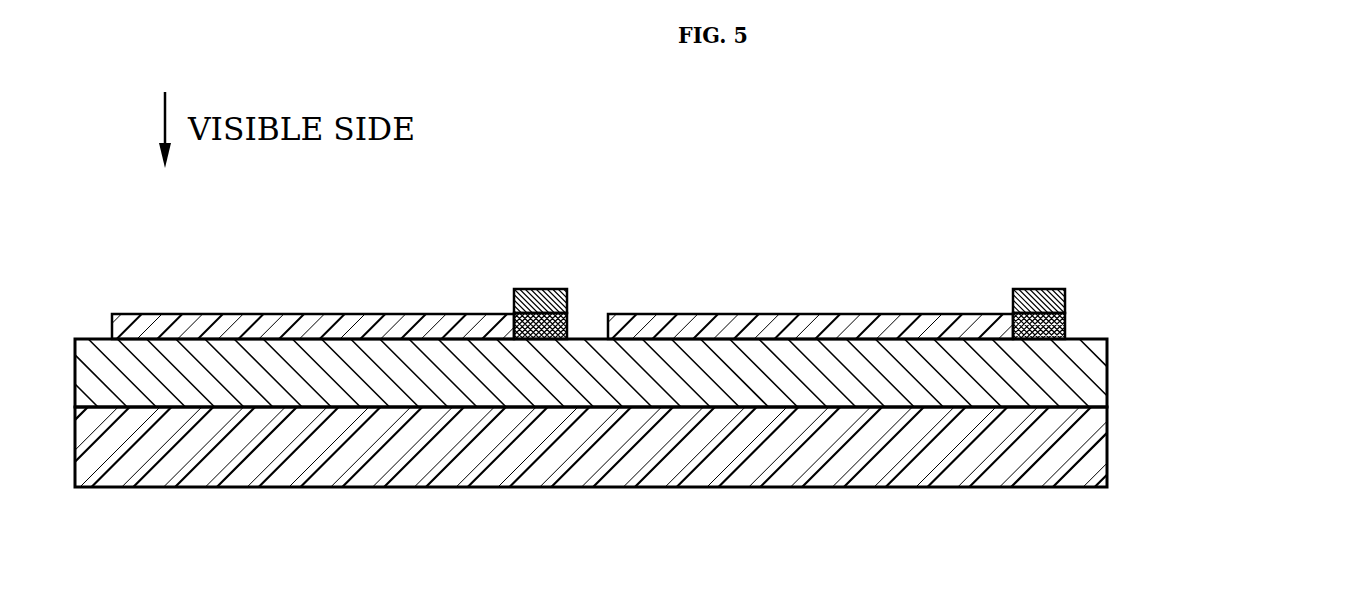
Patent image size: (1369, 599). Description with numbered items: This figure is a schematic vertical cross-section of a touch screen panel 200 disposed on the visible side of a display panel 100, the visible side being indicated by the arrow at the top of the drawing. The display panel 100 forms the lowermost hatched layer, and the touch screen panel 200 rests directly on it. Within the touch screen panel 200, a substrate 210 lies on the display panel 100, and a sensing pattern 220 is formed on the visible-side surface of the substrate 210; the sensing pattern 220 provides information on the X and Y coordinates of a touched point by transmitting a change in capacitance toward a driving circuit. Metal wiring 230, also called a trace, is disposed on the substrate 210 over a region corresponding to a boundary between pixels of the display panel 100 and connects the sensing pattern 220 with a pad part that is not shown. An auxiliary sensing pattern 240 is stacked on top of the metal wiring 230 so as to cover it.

The display panel 100 is at (1107, 445).
The touch screen panel 200 is at (716, 300).
The substrate 210 is at (1107, 372).
The sensing pattern 220 is at (930, 319).
The metal wiring 230 is at (1065, 325).
The auxiliary sensing pattern 240 is at (1065, 300).